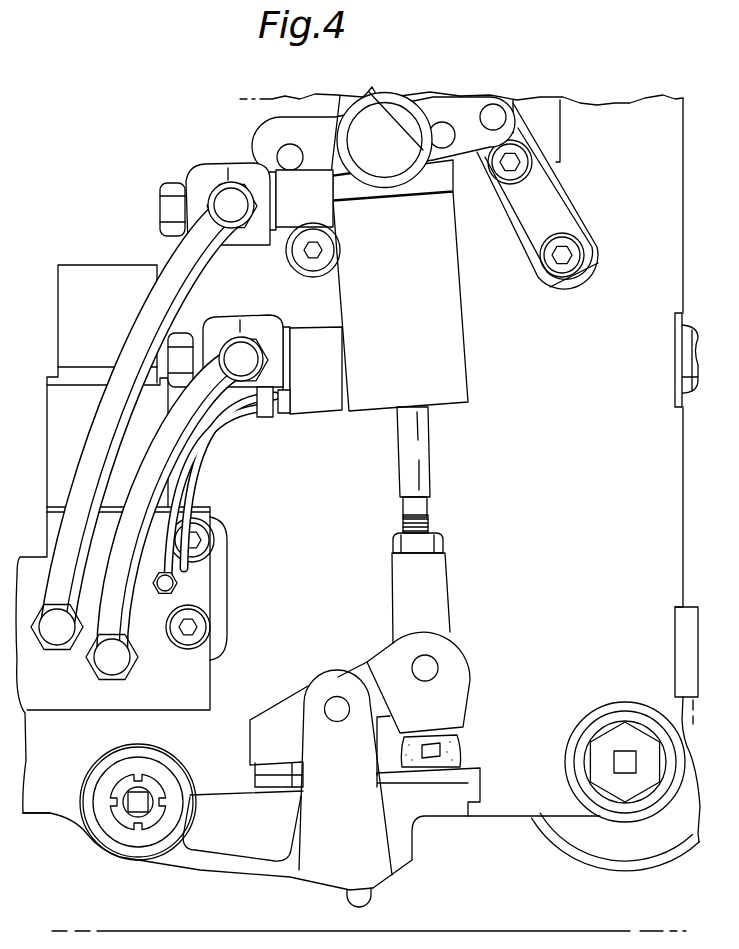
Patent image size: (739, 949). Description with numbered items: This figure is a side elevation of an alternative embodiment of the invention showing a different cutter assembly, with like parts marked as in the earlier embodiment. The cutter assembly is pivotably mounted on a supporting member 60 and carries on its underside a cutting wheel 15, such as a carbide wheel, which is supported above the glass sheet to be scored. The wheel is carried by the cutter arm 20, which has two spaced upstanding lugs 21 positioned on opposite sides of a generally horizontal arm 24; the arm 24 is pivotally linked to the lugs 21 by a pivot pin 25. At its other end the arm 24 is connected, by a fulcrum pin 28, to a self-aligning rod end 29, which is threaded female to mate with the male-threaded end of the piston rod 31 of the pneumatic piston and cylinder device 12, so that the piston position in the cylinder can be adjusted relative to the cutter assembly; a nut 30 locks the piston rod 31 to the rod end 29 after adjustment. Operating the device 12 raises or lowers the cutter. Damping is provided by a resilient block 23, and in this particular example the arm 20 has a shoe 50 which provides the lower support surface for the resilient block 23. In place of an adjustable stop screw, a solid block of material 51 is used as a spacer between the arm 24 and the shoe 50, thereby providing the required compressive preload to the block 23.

The pneumatic piston and cylinder device 12 is at (453, 326).
The cutting wheel 15 is at (365, 902).
The cutter arm 20 is at (227, 808).
The lugs 21 is at (330, 671).
The resilient block 23 is at (457, 746).
The arm 24 is at (293, 707).
The pivot pin 25 is at (330, 712).
The fulcrum pin 28 is at (427, 662).
The self-aligning rod end 29 is at (408, 598).
The nut 30 is at (437, 537).
The piston rod 31 is at (420, 443).
The shoe 50 is at (475, 770).
The solid block of material 51 is at (258, 777).
The supporting member 60 is at (137, 803).